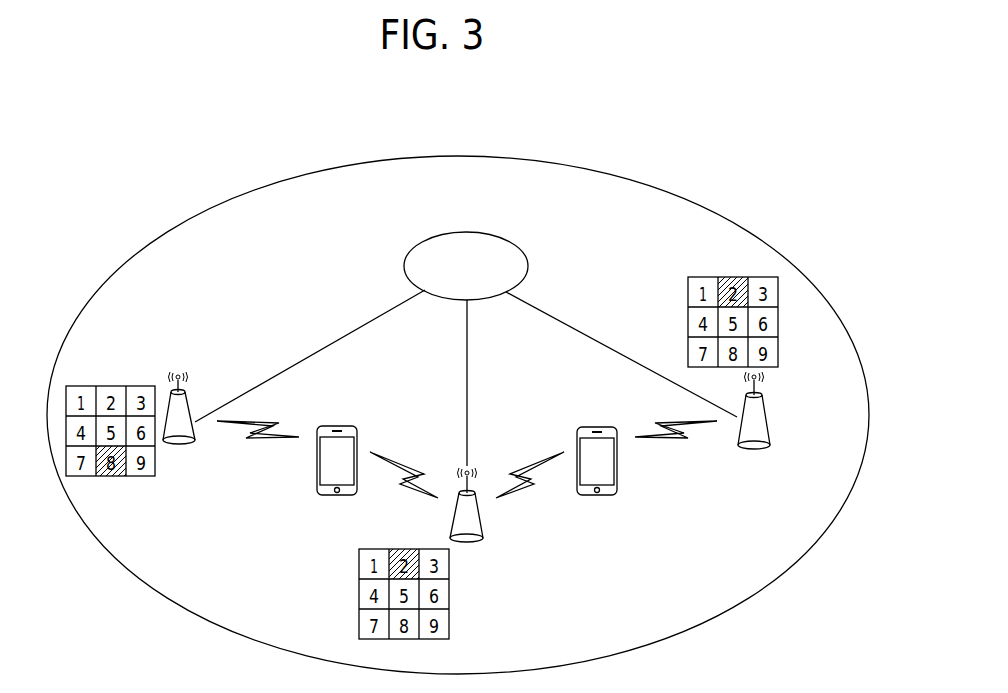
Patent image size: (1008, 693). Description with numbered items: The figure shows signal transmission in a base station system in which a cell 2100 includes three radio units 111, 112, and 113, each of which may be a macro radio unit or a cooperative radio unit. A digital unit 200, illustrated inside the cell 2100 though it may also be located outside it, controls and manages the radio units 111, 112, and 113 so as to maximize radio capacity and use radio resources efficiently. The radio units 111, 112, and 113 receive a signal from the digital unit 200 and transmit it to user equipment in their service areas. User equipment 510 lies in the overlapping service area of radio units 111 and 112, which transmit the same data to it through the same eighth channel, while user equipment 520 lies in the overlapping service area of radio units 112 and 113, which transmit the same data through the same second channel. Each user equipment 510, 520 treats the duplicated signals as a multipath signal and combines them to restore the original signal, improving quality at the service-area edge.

The cell 2100 is at (577, 167).
The digital unit 200 is at (506, 238).
The radio unit 111 is at (178, 450).
The radio unit 112 is at (471, 545).
The radio unit 113 is at (753, 452).
The user equipment 510 is at (329, 497).
The user equipment 520 is at (600, 497).